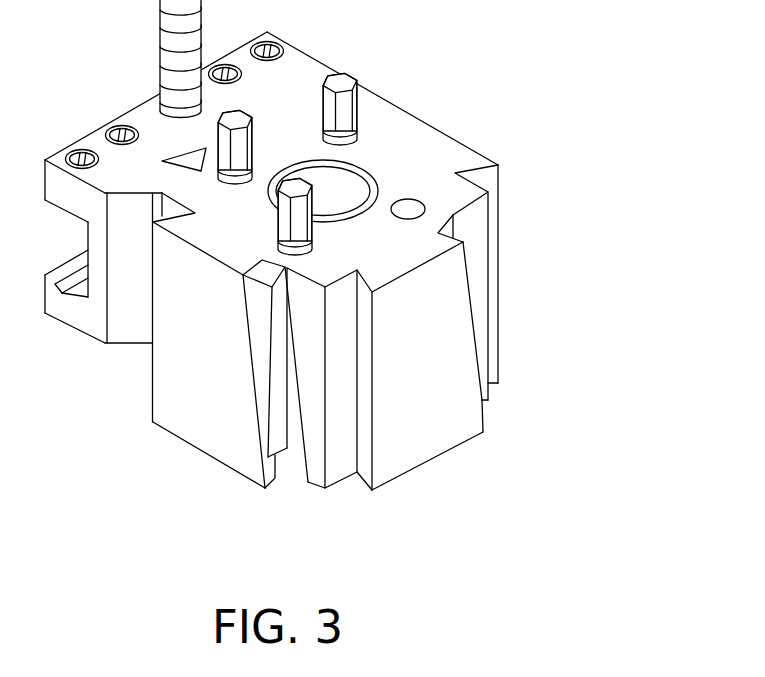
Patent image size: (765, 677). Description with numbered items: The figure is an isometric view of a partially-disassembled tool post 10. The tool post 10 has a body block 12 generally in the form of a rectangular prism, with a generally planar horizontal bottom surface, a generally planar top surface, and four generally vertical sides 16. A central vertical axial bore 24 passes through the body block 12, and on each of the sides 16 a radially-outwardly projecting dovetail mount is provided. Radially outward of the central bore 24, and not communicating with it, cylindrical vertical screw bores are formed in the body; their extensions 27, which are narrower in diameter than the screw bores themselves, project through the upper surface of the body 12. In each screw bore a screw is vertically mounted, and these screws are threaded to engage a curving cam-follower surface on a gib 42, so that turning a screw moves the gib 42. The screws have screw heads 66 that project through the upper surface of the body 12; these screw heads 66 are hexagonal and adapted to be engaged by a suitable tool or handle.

The tool post 10 is at (338, 252).
The body block 12 is at (422, 148).
The vertical sides 16 is at (358, 335).
The central vertical axial bore 24 is at (343, 187).
The extensions of screw bores 27 is at (412, 206).
The gib 42 is at (258, 340).
The screw heads 66 is at (329, 72).